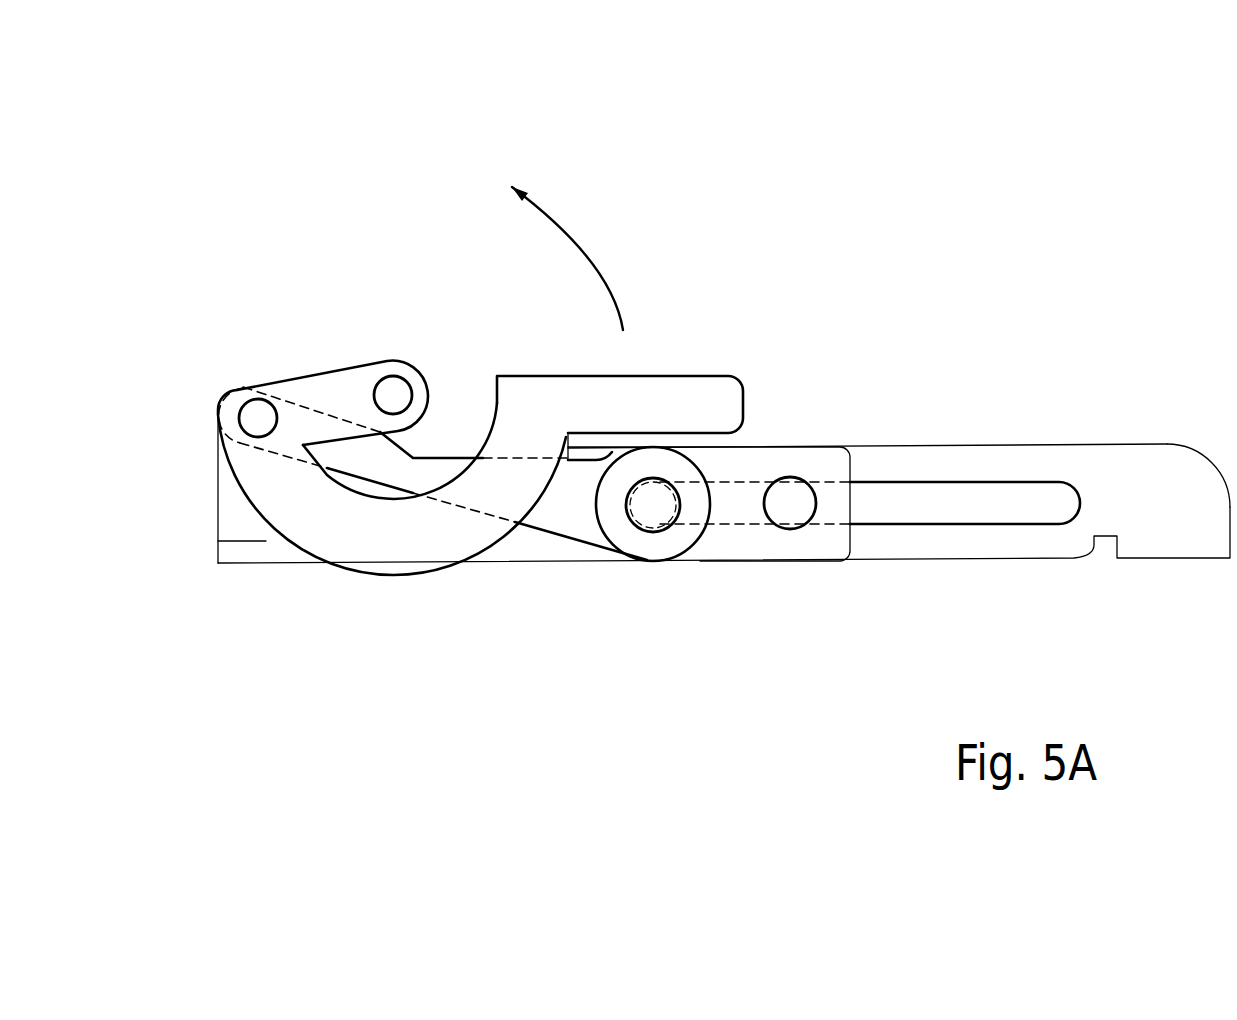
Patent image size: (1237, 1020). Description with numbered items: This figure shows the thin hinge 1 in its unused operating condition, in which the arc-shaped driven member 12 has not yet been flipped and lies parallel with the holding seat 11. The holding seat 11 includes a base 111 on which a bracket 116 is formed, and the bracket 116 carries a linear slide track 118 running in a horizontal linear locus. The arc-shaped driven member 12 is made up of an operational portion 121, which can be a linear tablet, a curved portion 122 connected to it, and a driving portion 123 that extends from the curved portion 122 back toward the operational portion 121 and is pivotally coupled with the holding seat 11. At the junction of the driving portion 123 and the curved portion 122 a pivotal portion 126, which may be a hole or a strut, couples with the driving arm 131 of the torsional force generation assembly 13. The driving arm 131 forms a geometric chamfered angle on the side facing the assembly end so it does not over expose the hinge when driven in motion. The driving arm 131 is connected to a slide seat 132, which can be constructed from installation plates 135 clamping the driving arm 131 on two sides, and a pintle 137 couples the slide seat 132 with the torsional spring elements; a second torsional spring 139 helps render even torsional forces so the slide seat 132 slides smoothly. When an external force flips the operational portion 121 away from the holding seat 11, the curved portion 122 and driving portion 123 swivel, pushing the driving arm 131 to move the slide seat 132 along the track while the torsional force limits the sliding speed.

The thin hinge 1 is at (1222, 111).
The holding seat 11 is at (724, 496).
The base 111 is at (903, 446).
The bracket 116 is at (1082, 458).
The linear slide track 118 is at (987, 480).
The arc-shaped driven member 12 is at (268, 528).
The operational portion 121 is at (558, 390).
The curved portion 122 is at (403, 555).
The driving portion 123 is at (328, 383).
The pivotal portion 126 is at (243, 393).
The torsional force generation assembly 13 is at (534, 511).
The driving arm 131 is at (617, 540).
The slide seat 132 is at (755, 563).
The installation plate 135 is at (850, 533).
The pintle 137 is at (657, 480).
The torsional spring 139 is at (788, 492).